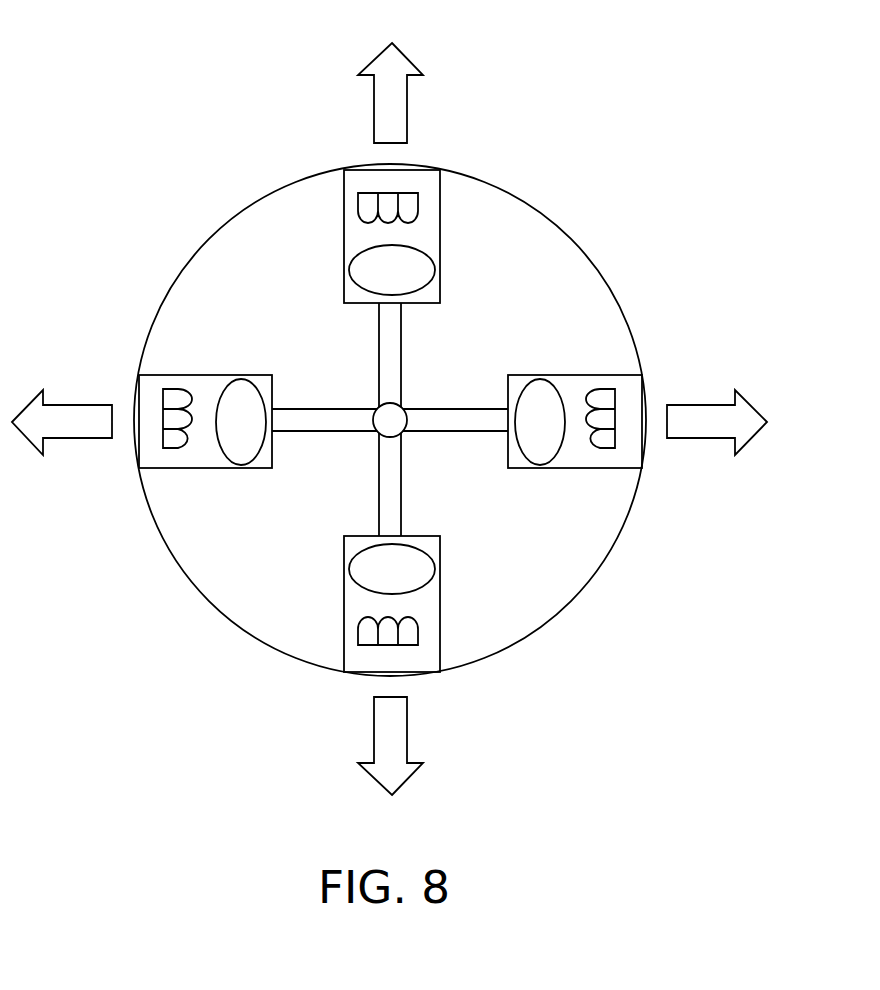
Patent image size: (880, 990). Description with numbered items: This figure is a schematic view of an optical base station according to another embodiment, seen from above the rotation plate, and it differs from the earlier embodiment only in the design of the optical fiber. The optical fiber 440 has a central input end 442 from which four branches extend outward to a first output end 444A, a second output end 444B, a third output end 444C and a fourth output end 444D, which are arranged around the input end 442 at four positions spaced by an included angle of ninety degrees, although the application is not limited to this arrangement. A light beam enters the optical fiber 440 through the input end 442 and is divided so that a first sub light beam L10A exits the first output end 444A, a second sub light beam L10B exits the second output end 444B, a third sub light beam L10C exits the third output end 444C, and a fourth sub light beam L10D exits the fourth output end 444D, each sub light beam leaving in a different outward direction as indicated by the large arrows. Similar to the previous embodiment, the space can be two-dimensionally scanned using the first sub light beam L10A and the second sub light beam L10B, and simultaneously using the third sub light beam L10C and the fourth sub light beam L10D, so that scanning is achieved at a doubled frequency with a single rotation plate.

The optical fiber 440 is at (390, 420).
The input end 442 is at (385, 405).
The first output end 444A is at (277, 437).
The second output end 444B is at (373, 309).
The third output end 444C is at (500, 403).
The fourth output end 444D is at (403, 535).
The first sub light beam L10A is at (72, 412).
The second sub light beam L10B is at (382, 103).
The third sub light beam L10C is at (705, 412).
The fourth sub light beam L10D is at (382, 733).